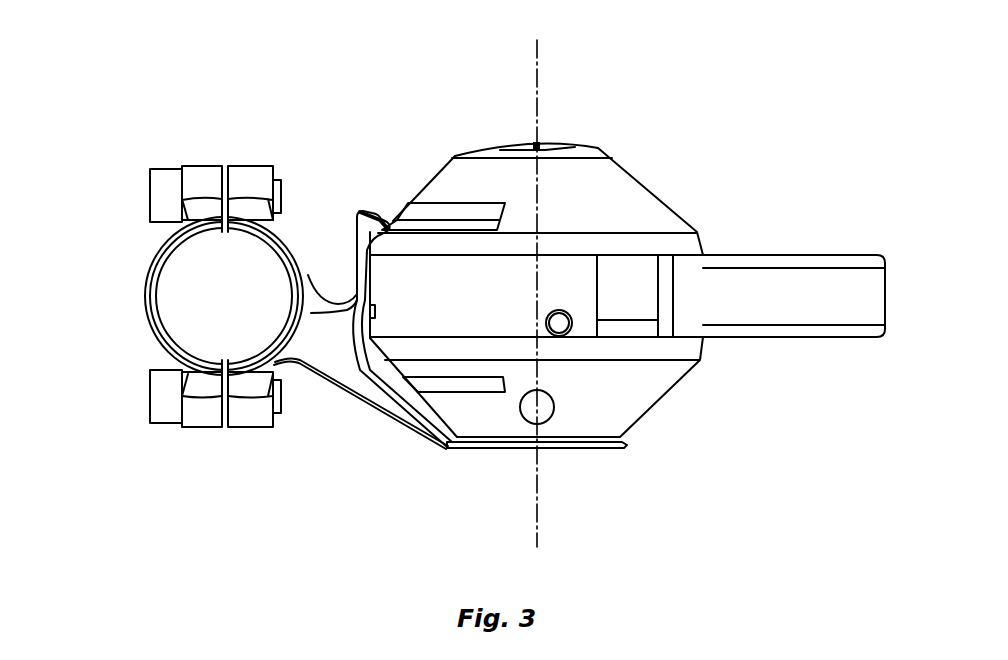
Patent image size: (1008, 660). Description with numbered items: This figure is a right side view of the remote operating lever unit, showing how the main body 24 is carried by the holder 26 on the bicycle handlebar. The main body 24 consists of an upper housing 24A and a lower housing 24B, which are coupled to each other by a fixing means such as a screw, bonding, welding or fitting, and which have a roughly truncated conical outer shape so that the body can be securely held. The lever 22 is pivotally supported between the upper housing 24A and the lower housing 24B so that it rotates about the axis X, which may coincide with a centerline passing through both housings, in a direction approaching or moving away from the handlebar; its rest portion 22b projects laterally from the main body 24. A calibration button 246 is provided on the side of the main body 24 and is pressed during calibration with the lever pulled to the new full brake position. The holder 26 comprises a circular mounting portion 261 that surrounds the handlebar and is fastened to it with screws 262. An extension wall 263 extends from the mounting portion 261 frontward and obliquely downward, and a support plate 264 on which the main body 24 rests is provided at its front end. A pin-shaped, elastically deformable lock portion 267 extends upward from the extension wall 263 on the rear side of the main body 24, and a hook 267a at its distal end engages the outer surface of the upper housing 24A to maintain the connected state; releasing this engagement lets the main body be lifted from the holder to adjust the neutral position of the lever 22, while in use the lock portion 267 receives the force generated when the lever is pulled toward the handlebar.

The lever 22 is at (794, 286).
The rest portion of the lever 22b is at (843, 297).
The main body 24 is at (577, 292).
The upper housing 24A is at (668, 207).
The lower housing 24B is at (640, 390).
The calibration button 246 is at (559, 334).
The holder 26 is at (242, 303).
The mounting portion 261 is at (143, 293).
The screws 262 is at (160, 168).
The extension wall 263 is at (352, 396).
The support plate 264 is at (590, 450).
The lock portion 267 is at (362, 188).
The hook 267a is at (383, 223).
The axis X is at (535, 64).